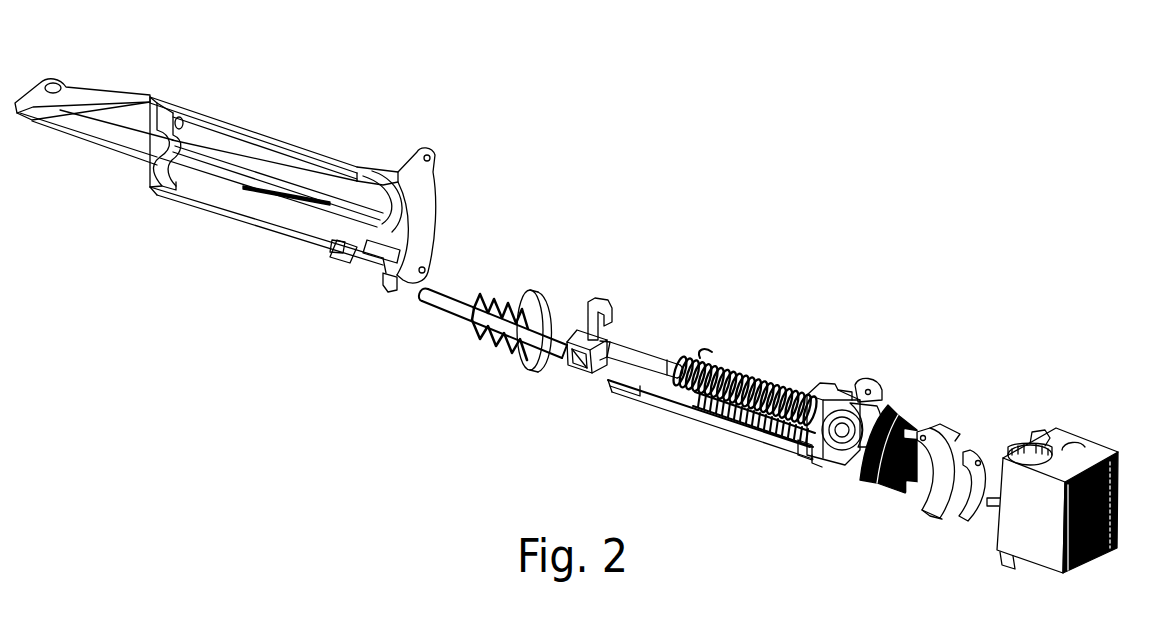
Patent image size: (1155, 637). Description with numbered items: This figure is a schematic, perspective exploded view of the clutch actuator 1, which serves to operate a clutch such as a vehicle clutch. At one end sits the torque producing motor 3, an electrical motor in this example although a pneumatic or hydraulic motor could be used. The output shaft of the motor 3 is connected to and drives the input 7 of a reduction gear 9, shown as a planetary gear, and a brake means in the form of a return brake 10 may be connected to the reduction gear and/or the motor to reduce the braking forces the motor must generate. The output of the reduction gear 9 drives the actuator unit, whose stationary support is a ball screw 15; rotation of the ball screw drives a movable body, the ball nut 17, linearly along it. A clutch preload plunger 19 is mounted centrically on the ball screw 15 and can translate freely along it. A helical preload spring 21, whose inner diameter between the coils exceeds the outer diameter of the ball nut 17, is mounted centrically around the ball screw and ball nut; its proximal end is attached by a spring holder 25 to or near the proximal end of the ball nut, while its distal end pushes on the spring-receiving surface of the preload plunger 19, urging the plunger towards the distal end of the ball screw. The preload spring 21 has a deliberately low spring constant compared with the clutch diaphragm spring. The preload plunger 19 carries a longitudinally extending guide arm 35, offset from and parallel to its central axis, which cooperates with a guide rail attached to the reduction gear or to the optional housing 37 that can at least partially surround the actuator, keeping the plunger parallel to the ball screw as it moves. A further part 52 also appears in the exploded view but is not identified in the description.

The clutch actuator 1 is at (578, 189).
The motor 3 is at (1045, 543).
The input 7 is at (860, 483).
The reduction gear 9 is at (817, 390).
The return brake 10 is at (922, 418).
The ball screw 15 is at (684, 390).
The ball nut 17 is at (753, 423).
The clutch preload plunger 19 is at (574, 362).
The helical preload spring 21 is at (720, 360).
The spring holder 25 is at (803, 445).
The guide arm 35 is at (427, 298).
The housing 37 is at (245, 127).
The half disc 52 is at (972, 450).